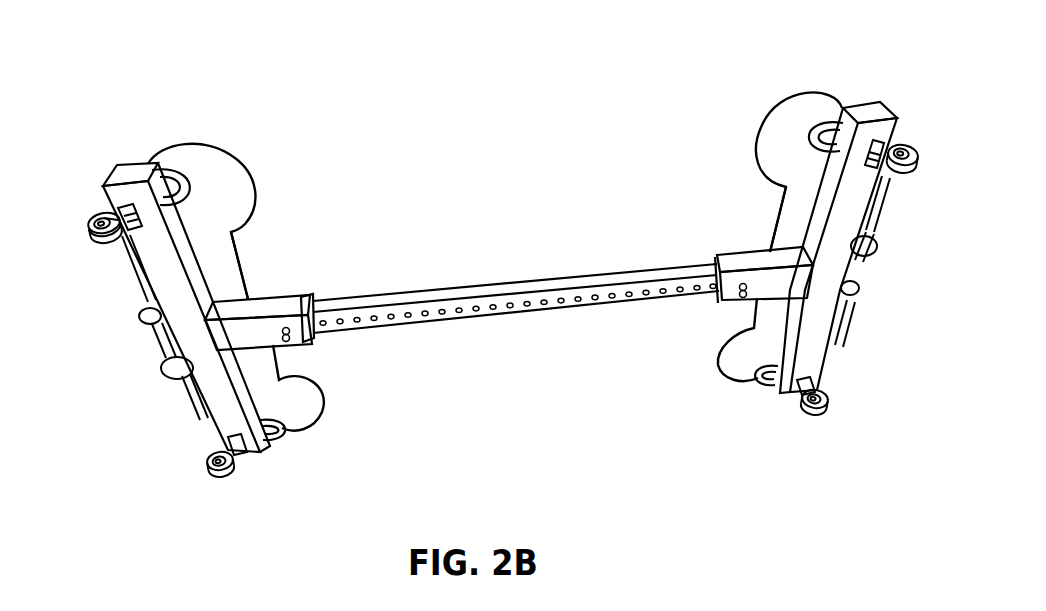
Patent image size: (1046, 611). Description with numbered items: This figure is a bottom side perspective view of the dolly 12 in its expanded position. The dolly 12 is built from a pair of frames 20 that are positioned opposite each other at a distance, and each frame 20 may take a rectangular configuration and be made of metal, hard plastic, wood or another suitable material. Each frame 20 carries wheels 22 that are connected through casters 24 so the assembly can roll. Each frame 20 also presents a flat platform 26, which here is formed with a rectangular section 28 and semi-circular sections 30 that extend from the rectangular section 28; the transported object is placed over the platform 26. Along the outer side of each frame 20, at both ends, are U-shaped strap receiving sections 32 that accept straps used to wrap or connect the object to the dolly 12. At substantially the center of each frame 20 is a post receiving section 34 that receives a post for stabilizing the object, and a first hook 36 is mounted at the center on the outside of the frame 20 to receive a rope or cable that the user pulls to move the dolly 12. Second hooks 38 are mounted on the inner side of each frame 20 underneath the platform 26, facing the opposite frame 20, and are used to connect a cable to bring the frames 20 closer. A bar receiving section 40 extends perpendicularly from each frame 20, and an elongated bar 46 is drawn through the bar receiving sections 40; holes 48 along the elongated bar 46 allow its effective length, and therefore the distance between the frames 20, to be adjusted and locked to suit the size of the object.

The dolly 12 is at (164, 46).
The frame 20 is at (230, 408).
The wheel 22 is at (105, 245).
The caster 24 is at (100, 215).
The platform 26 is at (232, 239).
The rectangular section 28 is at (245, 270).
The semi-circular section 30 is at (235, 184).
The strap receiving section 32 is at (125, 280).
The post receiving section 34 is at (165, 368).
The first hook 36 is at (145, 318).
The second hook 38 is at (183, 170).
The bar receiving section 40 is at (305, 297).
The elongated bar 46 is at (385, 300).
The hole 48 is at (465, 310).